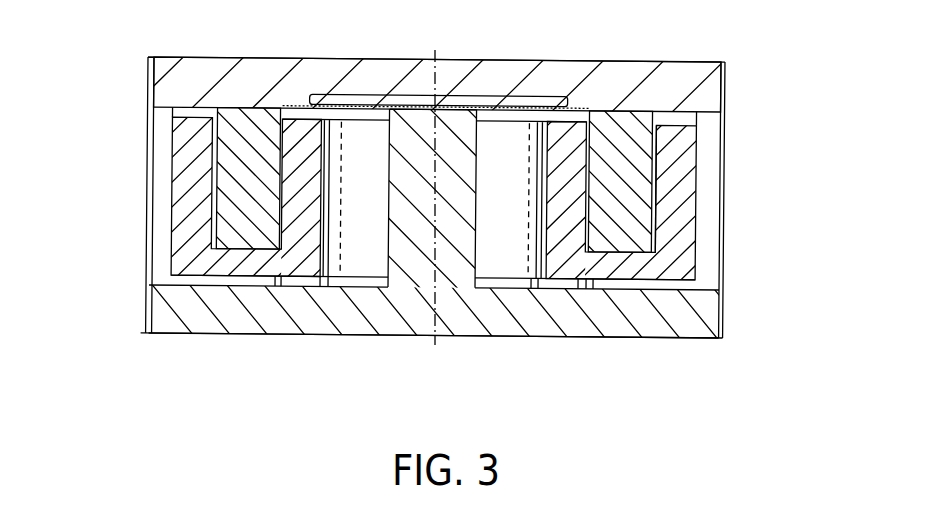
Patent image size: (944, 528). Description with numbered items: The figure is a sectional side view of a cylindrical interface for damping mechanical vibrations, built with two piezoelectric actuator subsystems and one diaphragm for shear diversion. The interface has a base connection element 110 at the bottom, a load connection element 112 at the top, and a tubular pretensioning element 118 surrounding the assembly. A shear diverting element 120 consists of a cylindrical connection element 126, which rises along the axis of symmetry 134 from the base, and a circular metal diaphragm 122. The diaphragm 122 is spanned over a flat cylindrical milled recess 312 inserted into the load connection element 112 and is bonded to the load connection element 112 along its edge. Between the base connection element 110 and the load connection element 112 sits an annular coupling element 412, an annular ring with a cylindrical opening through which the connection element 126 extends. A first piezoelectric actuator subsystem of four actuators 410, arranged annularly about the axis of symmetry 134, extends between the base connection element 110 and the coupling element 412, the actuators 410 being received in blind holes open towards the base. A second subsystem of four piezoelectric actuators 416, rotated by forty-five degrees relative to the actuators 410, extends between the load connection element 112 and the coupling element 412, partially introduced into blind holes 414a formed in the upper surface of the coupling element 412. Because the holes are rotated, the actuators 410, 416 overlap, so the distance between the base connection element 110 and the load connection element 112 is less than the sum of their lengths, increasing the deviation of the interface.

The base connection element 110 is at (168, 322).
The load connection element 112 is at (625, 82).
The tubular pretensioning element 118 is at (722, 192).
The shear diverting element 120 is at (370, 230).
The circular metal diaphragm 122 is at (384, 97).
The cylindrical connection element 126 is at (457, 240).
The axis of symmetry 134 is at (437, 52).
The flat cylindrical milled recess 312 is at (540, 100).
The piezoelectric actuators 410 is at (260, 279).
The annular coupling element 412 is at (690, 167).
The blind holes 414a is at (659, 220).
The piezoelectric actuators 416 is at (240, 176).